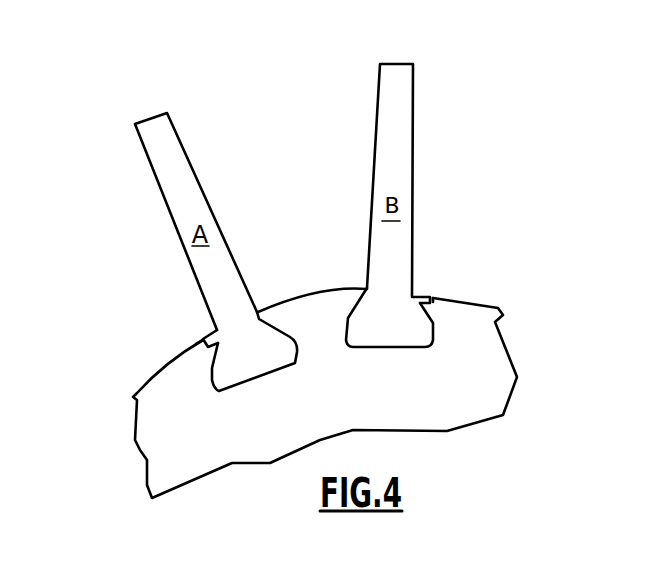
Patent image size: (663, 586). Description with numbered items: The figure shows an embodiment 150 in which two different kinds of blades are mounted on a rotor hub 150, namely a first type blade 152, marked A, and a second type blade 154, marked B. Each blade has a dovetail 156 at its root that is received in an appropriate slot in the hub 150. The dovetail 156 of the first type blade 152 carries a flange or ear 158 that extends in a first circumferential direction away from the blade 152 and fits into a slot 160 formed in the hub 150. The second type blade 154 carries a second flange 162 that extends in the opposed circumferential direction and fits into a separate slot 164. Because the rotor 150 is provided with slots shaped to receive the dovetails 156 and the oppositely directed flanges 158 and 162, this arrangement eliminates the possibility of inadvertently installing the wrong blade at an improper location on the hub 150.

The hub 150 is at (152, 441).
The first type blade 152 is at (230, 278).
The second type blade 154 is at (400, 137).
The dovetail 156 is at (228, 377).
The flange or ear 158 is at (212, 333).
The slot 160 is at (203, 342).
The second flange 162 is at (416, 292).
The slot 164 is at (435, 298).